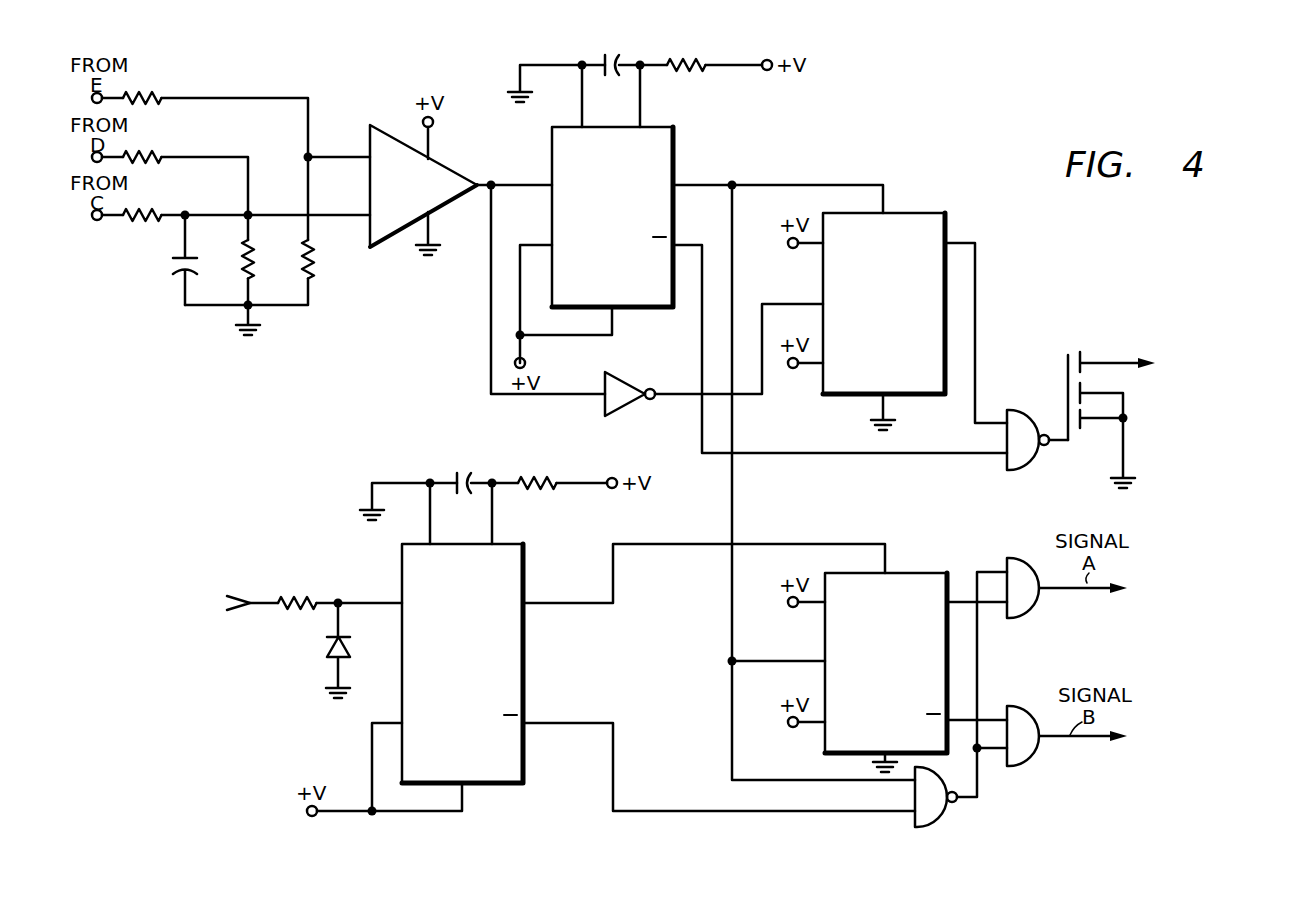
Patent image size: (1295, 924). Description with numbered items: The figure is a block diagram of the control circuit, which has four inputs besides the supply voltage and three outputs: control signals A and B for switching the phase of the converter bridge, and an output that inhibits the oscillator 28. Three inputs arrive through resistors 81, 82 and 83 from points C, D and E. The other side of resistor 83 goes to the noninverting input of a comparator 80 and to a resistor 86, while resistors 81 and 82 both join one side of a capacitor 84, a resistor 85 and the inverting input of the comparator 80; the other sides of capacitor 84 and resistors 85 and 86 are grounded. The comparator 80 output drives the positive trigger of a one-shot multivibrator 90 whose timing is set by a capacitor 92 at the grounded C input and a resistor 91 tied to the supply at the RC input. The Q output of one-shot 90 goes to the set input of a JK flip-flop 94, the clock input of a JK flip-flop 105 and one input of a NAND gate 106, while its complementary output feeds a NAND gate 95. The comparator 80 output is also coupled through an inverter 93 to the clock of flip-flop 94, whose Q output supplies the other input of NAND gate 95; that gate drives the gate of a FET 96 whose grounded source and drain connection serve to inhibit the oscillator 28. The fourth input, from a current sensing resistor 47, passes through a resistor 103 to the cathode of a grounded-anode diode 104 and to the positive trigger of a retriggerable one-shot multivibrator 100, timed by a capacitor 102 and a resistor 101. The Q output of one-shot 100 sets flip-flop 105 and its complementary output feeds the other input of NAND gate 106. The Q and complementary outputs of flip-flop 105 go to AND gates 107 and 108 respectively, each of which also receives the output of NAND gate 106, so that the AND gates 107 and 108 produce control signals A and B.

The comparator 80 is at (423, 186).
The resistor 81 is at (135, 211).
The resistor 82 is at (133, 152).
The resistor 83 is at (133, 93).
The capacitor 84 is at (173, 261).
The resistor 85 is at (245, 266).
The resistor 86 is at (312, 272).
The one-shot multivibrator 90 is at (612, 217).
The resistor 91 is at (692, 70).
The capacitor 92 is at (600, 62).
The inverter 93 is at (638, 381).
The JK flip-flop 94 is at (884, 303).
The NAND gate 95 is at (1030, 412).
The FET 96 is at (1066, 366).
The oscillator 28 is at (1222, 364).
The current sensing resistor 47 is at (190, 605).
The retriggerable one-shot multivibrator 100 is at (462, 663).
The resistor 101 is at (526, 478).
The capacitor 102 is at (452, 478).
The resistor 103 is at (298, 598).
The diode 104 is at (327, 645).
The JK flip-flop 105 is at (886, 663).
The NAND gate 106 is at (952, 808).
The AND gate 107 is at (1015, 557).
The AND gate 108 is at (1025, 705).